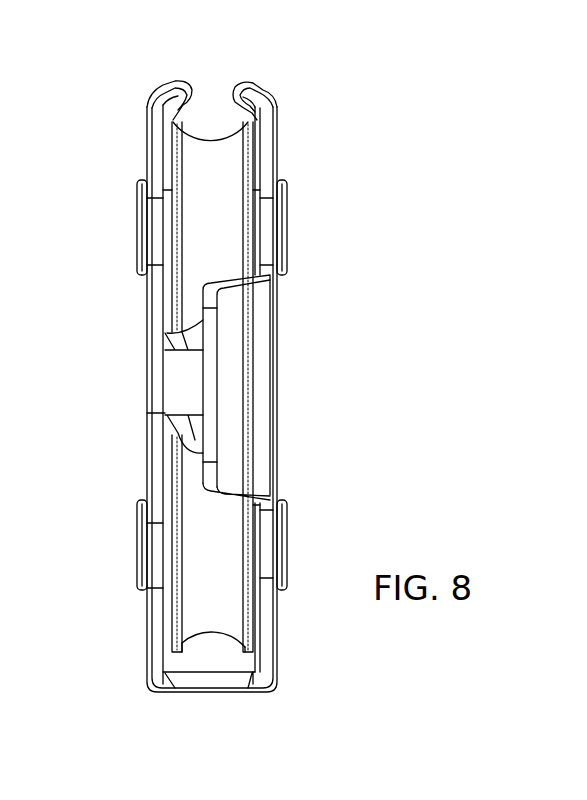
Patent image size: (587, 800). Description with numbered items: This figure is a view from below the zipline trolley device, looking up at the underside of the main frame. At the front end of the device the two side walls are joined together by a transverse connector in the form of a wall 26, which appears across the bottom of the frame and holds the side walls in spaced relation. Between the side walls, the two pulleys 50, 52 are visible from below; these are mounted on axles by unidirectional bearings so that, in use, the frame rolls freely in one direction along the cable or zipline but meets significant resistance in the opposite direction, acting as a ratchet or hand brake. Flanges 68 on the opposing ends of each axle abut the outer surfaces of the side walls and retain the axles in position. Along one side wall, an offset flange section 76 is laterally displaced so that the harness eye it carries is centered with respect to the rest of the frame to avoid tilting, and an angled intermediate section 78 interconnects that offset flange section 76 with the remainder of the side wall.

The wall 26 is at (212, 695).
The pulley 50 is at (183, 642).
The pulley 52 is at (180, 122).
The flanges 68 is at (137, 222).
The offset flange section 76 is at (240, 447).
The angled intermediate section 78 is at (245, 400).